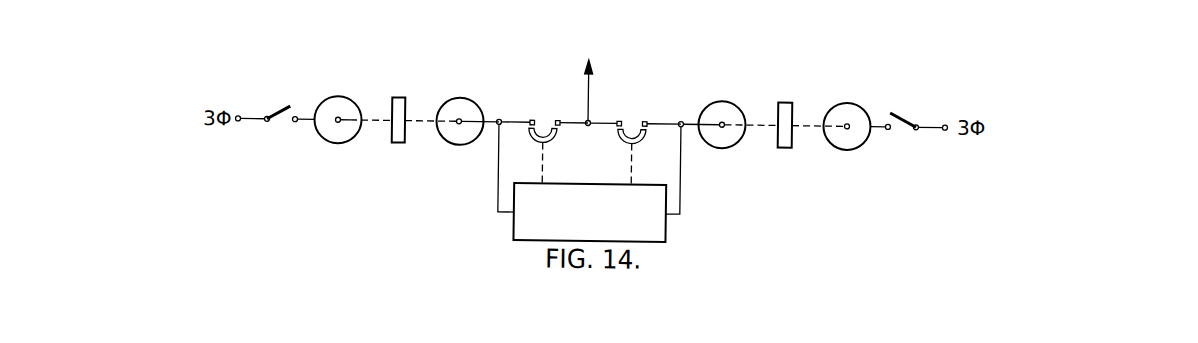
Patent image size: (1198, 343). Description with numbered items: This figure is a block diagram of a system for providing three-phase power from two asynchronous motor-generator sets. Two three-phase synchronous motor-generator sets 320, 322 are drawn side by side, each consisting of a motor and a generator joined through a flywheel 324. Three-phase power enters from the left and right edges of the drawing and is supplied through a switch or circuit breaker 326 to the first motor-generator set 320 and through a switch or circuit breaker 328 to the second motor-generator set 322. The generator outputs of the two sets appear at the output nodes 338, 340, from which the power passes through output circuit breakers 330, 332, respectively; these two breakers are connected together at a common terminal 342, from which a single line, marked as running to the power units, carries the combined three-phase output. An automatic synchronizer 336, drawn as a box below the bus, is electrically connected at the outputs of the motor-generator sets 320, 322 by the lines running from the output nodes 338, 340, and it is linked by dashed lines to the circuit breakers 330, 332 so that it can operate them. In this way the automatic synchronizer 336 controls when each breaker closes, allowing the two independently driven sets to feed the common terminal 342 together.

The motor-generator set 320 is at (415, 172).
The motor-generator set 322 is at (800, 174).
The flywheel 324 is at (392, 103).
The switch or circuit breaker 326 is at (278, 128).
The switch or circuit breaker 328 is at (902, 128).
The circuit breaker 330 is at (545, 121).
The circuit breaker 332 is at (632, 121).
The automatic synchronizer 336 is at (597, 183).
The first generator output node 338 is at (500, 120).
The second generator output node 340 is at (681, 120).
The terminal 342 is at (587, 88).